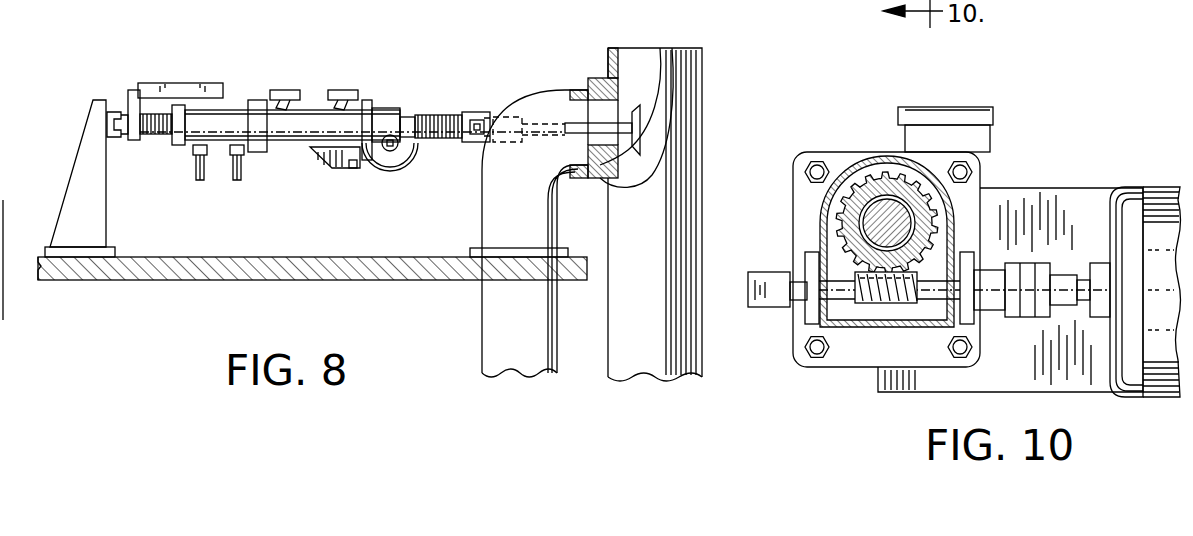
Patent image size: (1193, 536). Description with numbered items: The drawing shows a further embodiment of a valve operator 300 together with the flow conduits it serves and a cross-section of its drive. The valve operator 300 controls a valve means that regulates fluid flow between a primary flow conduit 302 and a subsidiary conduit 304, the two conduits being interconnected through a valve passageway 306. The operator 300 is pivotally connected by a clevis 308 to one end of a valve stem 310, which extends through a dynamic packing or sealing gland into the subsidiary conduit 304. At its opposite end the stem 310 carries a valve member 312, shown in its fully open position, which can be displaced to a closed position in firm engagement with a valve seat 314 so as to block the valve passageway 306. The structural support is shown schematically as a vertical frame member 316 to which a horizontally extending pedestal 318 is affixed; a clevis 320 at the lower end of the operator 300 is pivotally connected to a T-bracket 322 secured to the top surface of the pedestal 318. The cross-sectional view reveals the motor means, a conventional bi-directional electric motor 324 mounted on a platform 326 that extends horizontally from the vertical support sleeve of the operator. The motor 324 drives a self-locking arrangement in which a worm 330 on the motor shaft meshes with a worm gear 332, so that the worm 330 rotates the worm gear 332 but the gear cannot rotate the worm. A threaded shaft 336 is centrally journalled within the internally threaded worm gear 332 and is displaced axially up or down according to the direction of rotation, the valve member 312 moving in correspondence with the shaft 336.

In FIG. 8, the valve operator 300 is at (299, 160).
In FIG. 8, the primary flow conduit 302 is at (685, 214).
In FIG. 8, the subsidiary conduit 304 is at (497, 198).
In FIG. 8, the valve passageway 306 is at (640, 105).
In FIG. 8, the clevis 308 is at (470, 113).
In FIG. 8, the valve stem 310 is at (522, 117).
In FIG. 8, the valve member 312 is at (640, 130).
In FIG. 8, the valve seat 314 is at (635, 176).
In FIG. 8, the vertical frame member 316 is at (258, 280).
In FIG. 8, the pedestal 318 is at (90, 115).
In FIG. 8, the clevis 320 is at (133, 92).
In FIG. 8, the T-bracket 322 is at (112, 110).
In FIG. 10, the bi-directional electric motor 324 is at (1160, 190).
In FIG. 10, the platform 326 is at (1052, 190).
In FIG. 10, the worm 330 is at (880, 305).
In FIG. 10, the worm gear 332 is at (873, 205).
In FIG. 10, the threaded shaft 336 is at (880, 228).